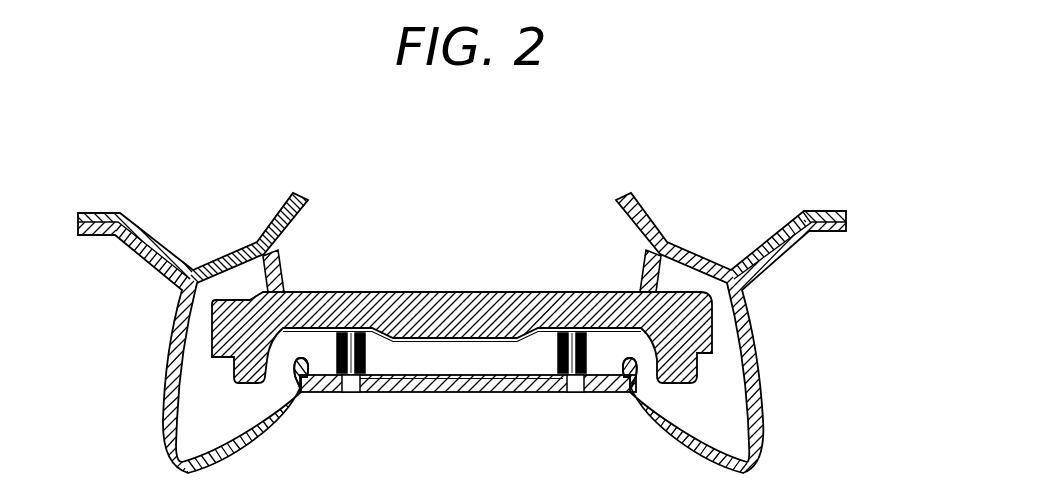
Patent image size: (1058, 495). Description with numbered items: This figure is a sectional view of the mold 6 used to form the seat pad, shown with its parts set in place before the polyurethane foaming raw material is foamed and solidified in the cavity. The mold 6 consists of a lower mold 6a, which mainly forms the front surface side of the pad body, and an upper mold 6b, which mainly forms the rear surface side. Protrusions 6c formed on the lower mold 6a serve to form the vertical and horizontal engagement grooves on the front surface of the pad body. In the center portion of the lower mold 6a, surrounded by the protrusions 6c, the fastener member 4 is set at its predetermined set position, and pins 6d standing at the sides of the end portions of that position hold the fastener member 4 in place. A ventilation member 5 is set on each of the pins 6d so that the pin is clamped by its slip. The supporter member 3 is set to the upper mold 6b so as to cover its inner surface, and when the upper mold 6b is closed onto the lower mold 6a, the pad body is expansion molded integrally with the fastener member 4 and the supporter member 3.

The mold 6 is at (737, 190).
The lower mold 6a is at (762, 338).
The upper mold 6b is at (437, 292).
The protrusions 6c is at (307, 359).
The pins 6d is at (366, 353).
The supporter member 3 is at (493, 342).
The fastener member 4 is at (438, 375).
The ventilation member 5 is at (340, 333).